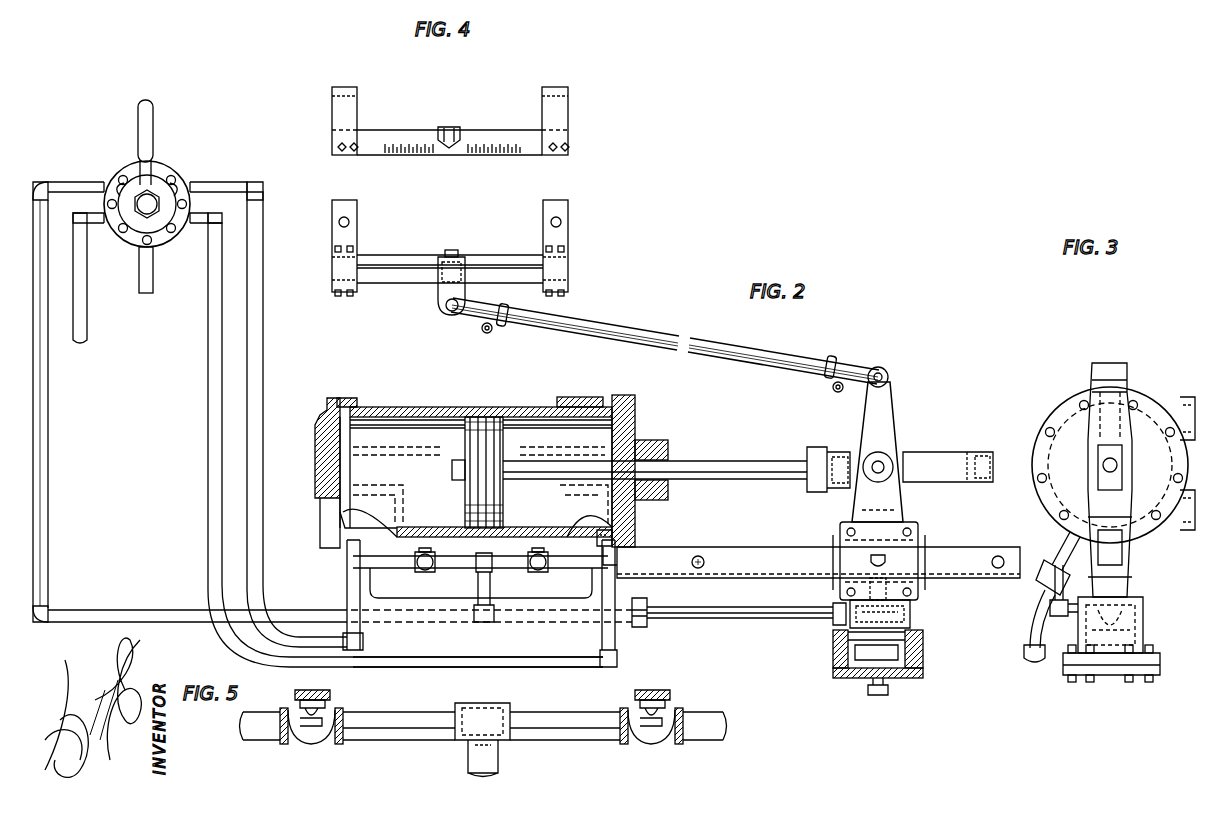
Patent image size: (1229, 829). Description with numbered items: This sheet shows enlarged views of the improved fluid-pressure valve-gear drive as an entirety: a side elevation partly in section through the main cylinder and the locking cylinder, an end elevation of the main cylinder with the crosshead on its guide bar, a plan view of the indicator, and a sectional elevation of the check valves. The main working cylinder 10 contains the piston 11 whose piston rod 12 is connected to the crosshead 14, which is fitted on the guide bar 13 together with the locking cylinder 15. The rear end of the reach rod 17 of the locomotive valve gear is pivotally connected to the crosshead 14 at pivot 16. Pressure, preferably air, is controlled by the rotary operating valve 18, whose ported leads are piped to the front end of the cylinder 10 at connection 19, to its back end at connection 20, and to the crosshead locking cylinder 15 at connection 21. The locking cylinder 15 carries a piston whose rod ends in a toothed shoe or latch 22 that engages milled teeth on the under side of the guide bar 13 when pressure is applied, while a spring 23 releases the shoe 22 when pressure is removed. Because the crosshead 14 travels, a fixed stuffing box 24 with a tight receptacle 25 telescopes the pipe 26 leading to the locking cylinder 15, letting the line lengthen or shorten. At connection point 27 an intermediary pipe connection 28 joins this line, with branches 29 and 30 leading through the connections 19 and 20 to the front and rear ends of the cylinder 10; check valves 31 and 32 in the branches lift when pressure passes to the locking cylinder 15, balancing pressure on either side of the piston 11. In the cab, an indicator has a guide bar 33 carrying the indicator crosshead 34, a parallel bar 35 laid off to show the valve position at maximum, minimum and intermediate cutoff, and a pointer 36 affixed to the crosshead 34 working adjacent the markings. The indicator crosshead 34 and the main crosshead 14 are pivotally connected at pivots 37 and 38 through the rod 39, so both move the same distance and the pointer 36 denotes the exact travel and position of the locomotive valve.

In FIG. 2, the main working cylinder 10 is at (422, 408).
In FIG. 2, the piston 11 is at (465, 497).
In FIG. 2, the piston rod 12 is at (690, 458).
In FIG. 2, the guide bar 13 is at (712, 547).
In FIG. 2, the crosshead 14 is at (918, 528).
In FIG. 3, the crosshead 14 is at (1130, 500).
In FIG. 2, the locking cylinder 15 is at (922, 638).
In FIG. 2, the pivot 16 is at (884, 463).
In FIG. 2, the reach rod 17 is at (975, 450).
In FIG. 2, the operating valve 18 is at (139, 143).
In FIG. 2, the front end cylinder connection 19 is at (612, 540).
In FIG. 3, the front end cylinder connection 19 is at (1068, 535).
In FIG. 2, the back end cylinder connection 20 is at (330, 548).
In FIG. 2, the locking cylinder connection 21 is at (833, 612).
In FIG. 2, the shoe or latch 22 is at (925, 585).
In FIG. 2, the spring 23 is at (906, 624).
In FIG. 2, the stuffing box 24 is at (633, 630).
In FIG. 2, the receptacle 25 is at (560, 622).
In FIG. 2, the pipe 26 is at (752, 620).
In FIG. 2, the pipe line connection point 27 is at (470, 620).
In FIG. 3, the pipe line connection point 27 is at (1058, 620).
In FIG. 2, the intermediary pipe connection 28 is at (491, 588).
In FIG. 3, the intermediary pipe connection 28 is at (1060, 578).
In FIG. 5, the intermediary pipe connection 28 is at (500, 757).
In FIG. 2, the branch pipe 29 is at (505, 556).
In FIG. 5, the branch pipe 29 is at (540, 712).
In FIG. 2, the branch pipe 30 is at (456, 557).
In FIG. 5, the branch pipe 30 is at (396, 712).
In FIG. 2, the check valve 31 is at (526, 563).
In FIG. 5, the check valve 31 is at (630, 712).
In FIG. 2, the check valve 32 is at (436, 565).
In FIG. 5, the check valve 32 is at (336, 712).
In FIG. 2, the indicator guide bar 33 is at (400, 290).
In FIG. 2, the indicator crosshead 34 is at (436, 296).
In FIG. 4, the indicator bar 35 is at (483, 155).
In FIG. 4, the indicator pointer 36 is at (456, 155).
In FIG. 2, the indicator pointer 36 is at (451, 250).
In FIG. 2, the pivot 37 is at (447, 312).
In FIG. 2, the pivot 38 is at (882, 370).
In FIG. 3, the pivot 38 is at (1120, 363).
In FIG. 2, the rod 39 is at (646, 331).